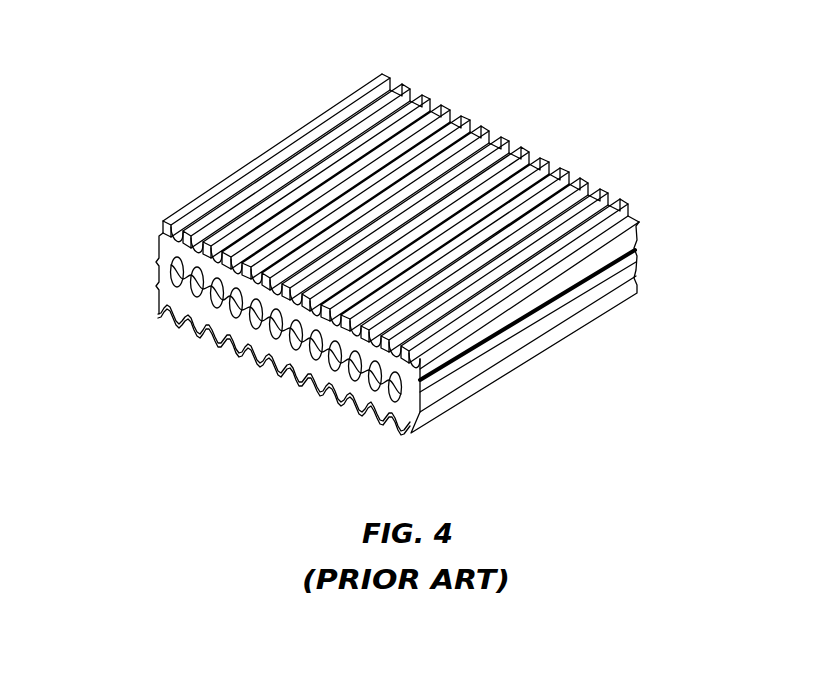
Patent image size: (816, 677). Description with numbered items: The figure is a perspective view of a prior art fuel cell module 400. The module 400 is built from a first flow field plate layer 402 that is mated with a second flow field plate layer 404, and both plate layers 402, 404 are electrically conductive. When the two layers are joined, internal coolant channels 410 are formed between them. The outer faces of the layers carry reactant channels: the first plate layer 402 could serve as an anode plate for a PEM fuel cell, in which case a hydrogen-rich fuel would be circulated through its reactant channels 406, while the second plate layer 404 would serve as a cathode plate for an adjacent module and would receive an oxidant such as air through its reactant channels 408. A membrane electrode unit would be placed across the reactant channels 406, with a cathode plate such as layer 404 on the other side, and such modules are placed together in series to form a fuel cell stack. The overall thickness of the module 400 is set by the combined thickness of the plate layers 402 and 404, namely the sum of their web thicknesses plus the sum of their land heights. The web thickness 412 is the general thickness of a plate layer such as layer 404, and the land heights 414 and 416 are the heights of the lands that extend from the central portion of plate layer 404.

The fuel cell module 400 is at (583, 130).
The first flow field plate layer 402 is at (160, 242).
The second flow field plate layer 404 is at (155, 290).
The reactant channels 406 is at (183, 208).
The reactant channels 408 is at (177, 315).
The internal coolant channels 410 is at (210, 303).
The web thickness 412 is at (410, 423).
The land height 414 is at (402, 437).
The land height 416 is at (413, 398).